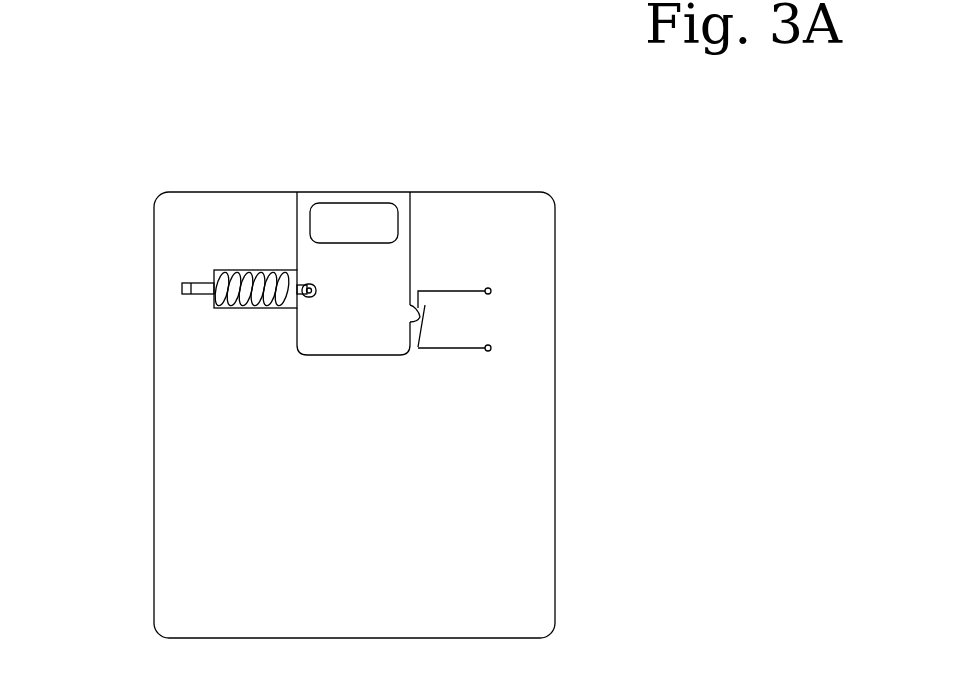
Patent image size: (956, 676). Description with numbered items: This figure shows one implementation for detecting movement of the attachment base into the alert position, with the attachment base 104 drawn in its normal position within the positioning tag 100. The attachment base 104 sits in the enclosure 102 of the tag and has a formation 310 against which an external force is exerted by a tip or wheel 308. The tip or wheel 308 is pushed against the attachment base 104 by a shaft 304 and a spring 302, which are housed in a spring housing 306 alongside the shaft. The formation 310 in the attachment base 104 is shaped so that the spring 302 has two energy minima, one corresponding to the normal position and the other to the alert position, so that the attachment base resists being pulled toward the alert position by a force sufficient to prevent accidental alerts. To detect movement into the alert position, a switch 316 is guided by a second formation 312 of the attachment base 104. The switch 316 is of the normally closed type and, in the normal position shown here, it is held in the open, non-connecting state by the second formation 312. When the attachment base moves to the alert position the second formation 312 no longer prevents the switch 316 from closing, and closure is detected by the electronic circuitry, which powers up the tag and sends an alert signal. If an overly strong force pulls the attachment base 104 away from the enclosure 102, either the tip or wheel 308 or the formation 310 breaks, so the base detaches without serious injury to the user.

The device 100 is at (102, 148).
The enclosure 102 is at (488, 191).
The attachment base 104 is at (387, 192).
The spring 302 is at (265, 280).
The shaft 304 is at (212, 282).
The spring housing 306 is at (218, 308).
The tip or wheel 308 is at (307, 296).
The formation 310 is at (317, 310).
The second formation 312 is at (419, 316).
The switch 316 is at (450, 290).